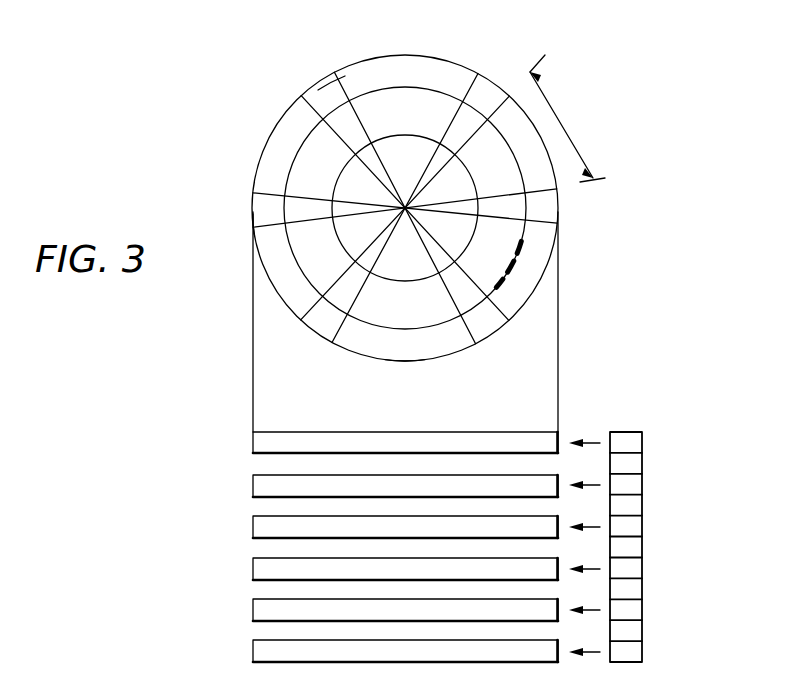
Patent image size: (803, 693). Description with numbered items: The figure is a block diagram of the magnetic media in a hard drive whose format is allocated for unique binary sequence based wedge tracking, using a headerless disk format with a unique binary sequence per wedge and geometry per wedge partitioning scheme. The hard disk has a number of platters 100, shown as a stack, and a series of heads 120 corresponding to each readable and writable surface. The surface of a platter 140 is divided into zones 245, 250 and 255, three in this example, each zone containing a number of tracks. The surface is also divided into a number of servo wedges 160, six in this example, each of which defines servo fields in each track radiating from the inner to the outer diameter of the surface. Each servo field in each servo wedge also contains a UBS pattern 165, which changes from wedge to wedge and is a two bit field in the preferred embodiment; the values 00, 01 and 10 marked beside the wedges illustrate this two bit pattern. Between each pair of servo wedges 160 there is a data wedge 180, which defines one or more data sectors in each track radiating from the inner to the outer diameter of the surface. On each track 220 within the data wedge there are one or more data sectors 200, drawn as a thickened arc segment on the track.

The platters 100 is at (210, 528).
The heads 120 is at (643, 547).
The platter surface 140 is at (559, 418).
The servo wedges 160 is at (330, 73).
The UBS pattern 165 is at (307, 60).
The data wedge 180 is at (568, 127).
The data sectors 200 is at (500, 283).
The track 220 is at (294, 258).
The zone 245 is at (406, 280).
The zone 250 is at (427, 122).
The zone 255 is at (405, 360).
The zone code 00 is at (307, 73).
The zone code 01 is at (240, 206).
The zone code 10 is at (307, 345).